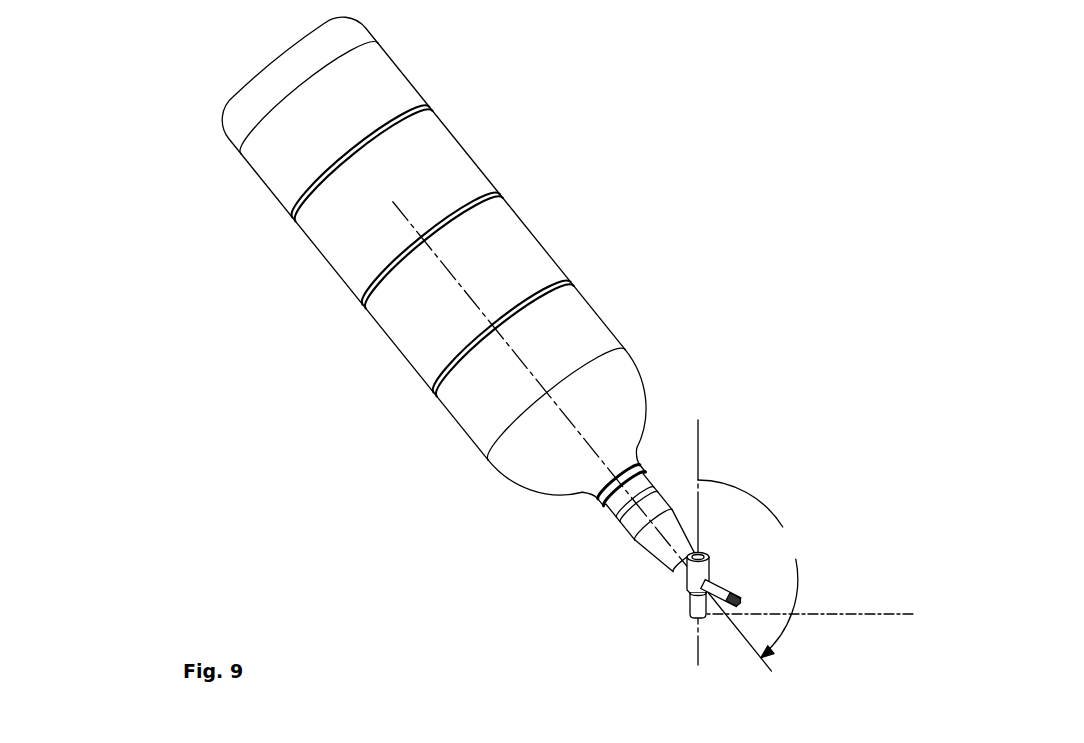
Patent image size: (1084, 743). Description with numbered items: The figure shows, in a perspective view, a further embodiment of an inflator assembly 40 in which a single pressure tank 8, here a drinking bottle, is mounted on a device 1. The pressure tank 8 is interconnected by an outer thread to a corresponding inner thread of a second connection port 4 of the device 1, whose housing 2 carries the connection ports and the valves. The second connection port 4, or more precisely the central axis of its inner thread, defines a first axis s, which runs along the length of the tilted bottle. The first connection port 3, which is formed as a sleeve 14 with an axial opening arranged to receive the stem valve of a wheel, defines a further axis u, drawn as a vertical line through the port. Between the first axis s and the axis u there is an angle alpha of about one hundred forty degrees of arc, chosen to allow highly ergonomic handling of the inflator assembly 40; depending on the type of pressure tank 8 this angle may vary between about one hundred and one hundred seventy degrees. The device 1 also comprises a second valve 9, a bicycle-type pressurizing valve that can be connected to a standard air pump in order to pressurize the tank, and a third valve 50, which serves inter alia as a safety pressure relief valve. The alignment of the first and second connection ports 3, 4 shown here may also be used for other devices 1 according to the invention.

The inflator assembly 40 is at (157, 113).
The pressure tank 8 is at (263, 187).
The second connection port 4 is at (628, 518).
The device 1 is at (379, 549).
The housing 2 is at (665, 555).
The first connection port 3 is at (663, 622).
The third valve 50 is at (784, 554).
The second valve 9 is at (742, 601).
The sleeve 14 is at (822, 615).
The first axis s is at (577, 447).
The third axis u is at (701, 480).